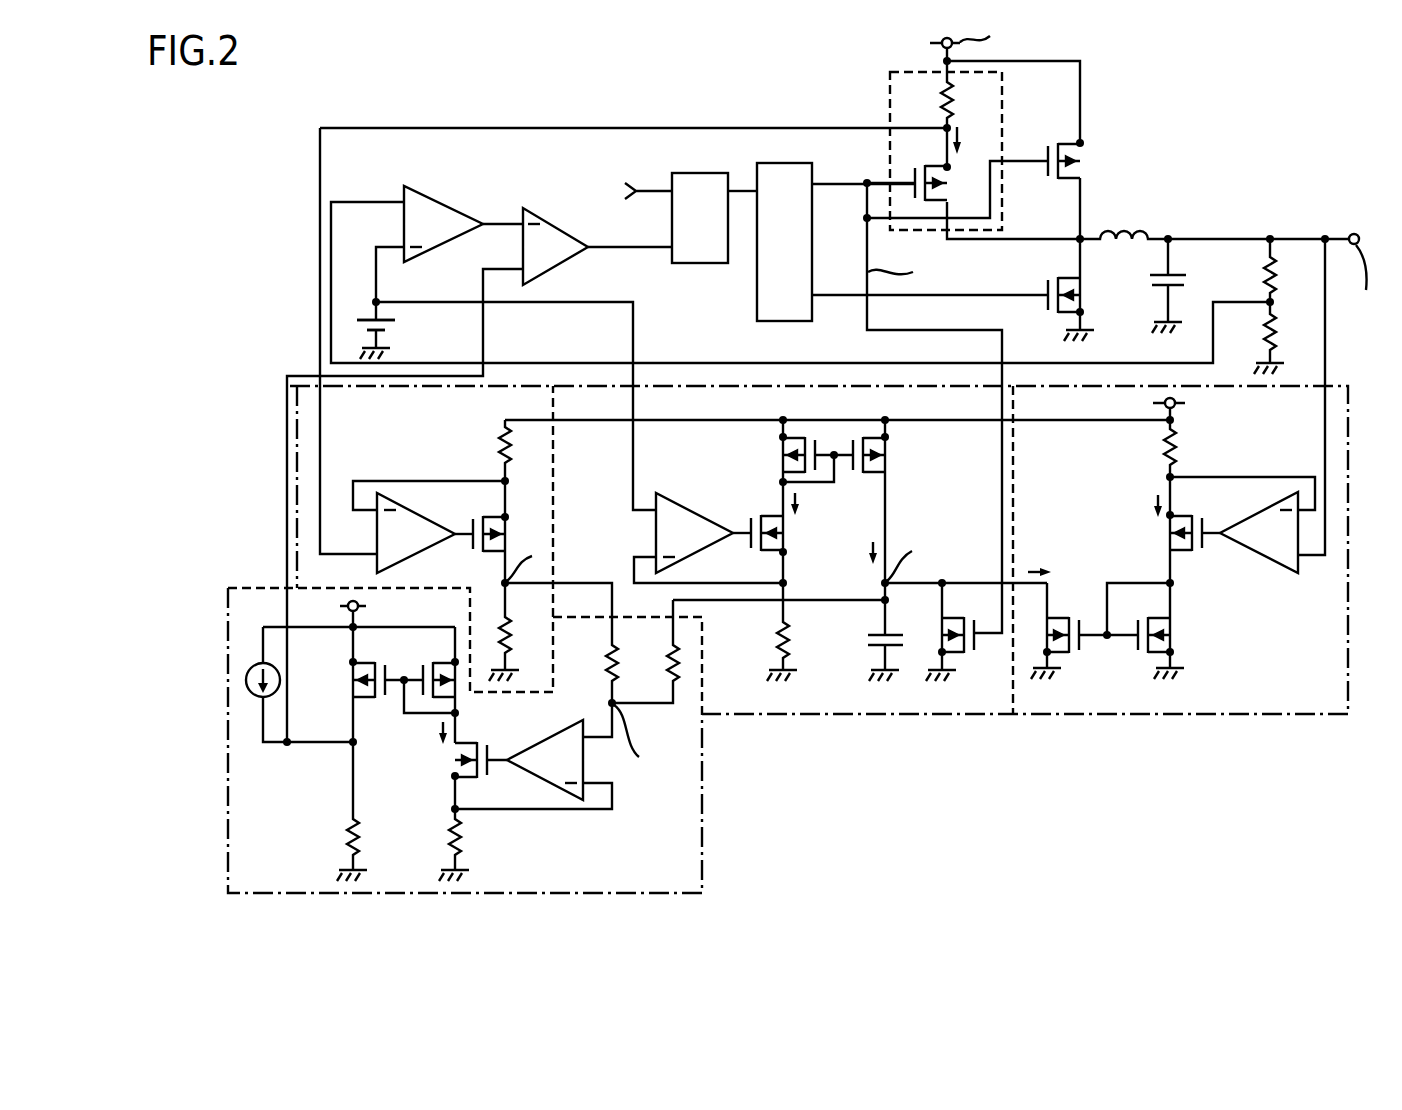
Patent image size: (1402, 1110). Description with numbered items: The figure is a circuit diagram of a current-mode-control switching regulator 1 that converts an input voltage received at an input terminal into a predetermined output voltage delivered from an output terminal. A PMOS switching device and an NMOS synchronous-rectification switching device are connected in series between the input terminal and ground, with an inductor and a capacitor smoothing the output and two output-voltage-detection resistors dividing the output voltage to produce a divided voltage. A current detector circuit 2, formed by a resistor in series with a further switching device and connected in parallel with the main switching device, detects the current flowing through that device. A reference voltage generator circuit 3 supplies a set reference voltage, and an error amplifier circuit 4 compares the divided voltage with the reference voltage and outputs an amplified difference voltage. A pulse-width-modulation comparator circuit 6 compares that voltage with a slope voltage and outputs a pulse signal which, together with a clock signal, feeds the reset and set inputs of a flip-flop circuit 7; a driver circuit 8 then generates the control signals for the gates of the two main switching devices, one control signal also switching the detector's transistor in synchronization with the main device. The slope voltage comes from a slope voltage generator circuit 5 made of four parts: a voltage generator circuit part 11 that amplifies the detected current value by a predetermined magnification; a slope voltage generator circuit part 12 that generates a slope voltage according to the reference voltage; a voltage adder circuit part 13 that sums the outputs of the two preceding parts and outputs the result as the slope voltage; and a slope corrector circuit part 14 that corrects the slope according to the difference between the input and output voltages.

The switching regulator 1 is at (772, 66).
The current detector circuit 2 is at (889, 107).
The reference voltage generator circuit 3 is at (394, 327).
The error amplifier circuit 4 is at (441, 203).
The slope voltage generator circuit 5 is at (943, 719).
The PWM comparator circuit 6 is at (527, 209).
The flip-flop circuit 7 is at (700, 263).
The driver circuit 8 is at (757, 302).
The voltage generator circuit part 11 is at (312, 425).
The slope voltage generator circuit part 12 is at (826, 682).
The voltage adder circuit part 13 is at (663, 826).
The slope corrector circuit part 14 is at (1237, 682).